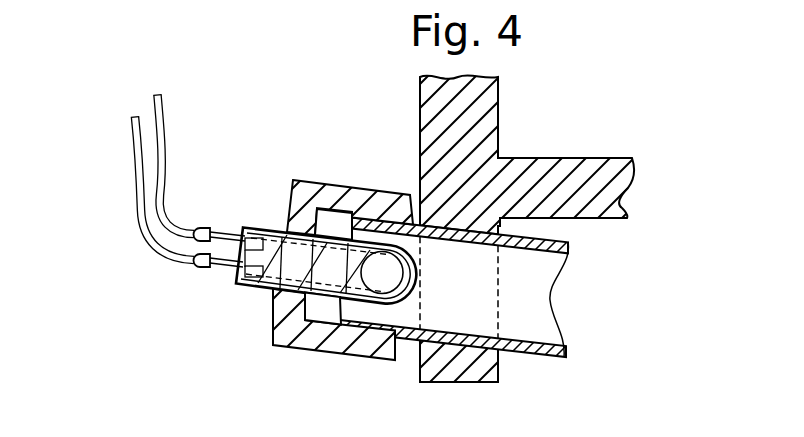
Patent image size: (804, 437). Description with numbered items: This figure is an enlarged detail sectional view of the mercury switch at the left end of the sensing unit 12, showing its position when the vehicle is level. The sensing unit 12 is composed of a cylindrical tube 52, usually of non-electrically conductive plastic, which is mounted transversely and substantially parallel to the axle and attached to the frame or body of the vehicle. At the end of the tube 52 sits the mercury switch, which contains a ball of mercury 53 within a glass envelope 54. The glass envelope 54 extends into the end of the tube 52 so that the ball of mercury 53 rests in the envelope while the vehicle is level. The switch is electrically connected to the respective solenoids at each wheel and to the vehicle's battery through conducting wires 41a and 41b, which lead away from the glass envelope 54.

The sensing unit 12 is at (558, 157).
The cylindrical tube 52 is at (537, 350).
The ball of mercury 53 is at (388, 266).
The glass envelope 54 is at (272, 288).
The conducting wire 41a is at (164, 133).
The conducting wire 41b is at (137, 176).